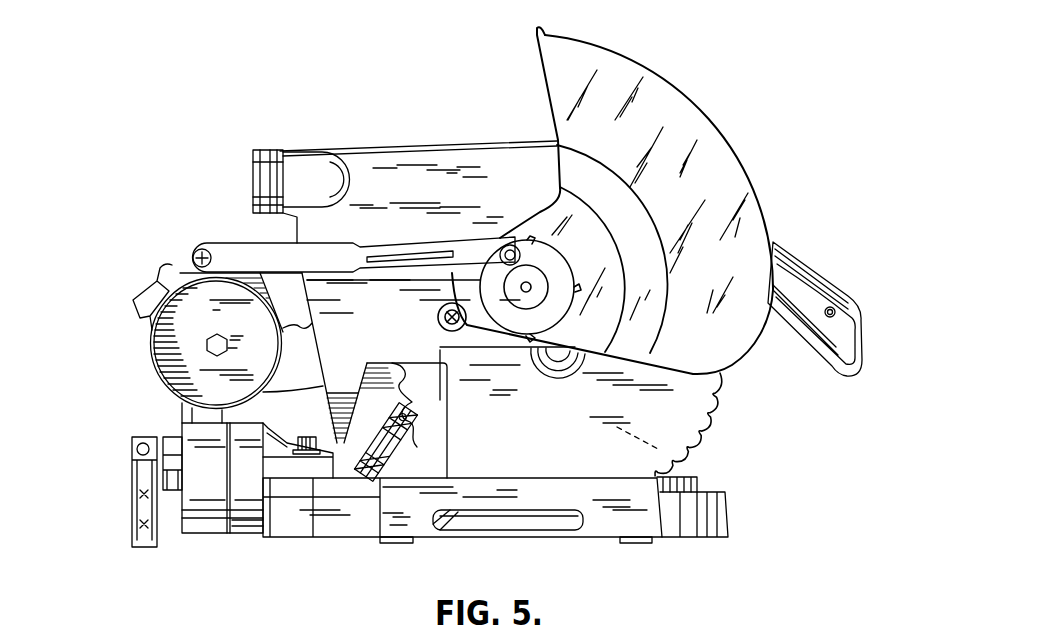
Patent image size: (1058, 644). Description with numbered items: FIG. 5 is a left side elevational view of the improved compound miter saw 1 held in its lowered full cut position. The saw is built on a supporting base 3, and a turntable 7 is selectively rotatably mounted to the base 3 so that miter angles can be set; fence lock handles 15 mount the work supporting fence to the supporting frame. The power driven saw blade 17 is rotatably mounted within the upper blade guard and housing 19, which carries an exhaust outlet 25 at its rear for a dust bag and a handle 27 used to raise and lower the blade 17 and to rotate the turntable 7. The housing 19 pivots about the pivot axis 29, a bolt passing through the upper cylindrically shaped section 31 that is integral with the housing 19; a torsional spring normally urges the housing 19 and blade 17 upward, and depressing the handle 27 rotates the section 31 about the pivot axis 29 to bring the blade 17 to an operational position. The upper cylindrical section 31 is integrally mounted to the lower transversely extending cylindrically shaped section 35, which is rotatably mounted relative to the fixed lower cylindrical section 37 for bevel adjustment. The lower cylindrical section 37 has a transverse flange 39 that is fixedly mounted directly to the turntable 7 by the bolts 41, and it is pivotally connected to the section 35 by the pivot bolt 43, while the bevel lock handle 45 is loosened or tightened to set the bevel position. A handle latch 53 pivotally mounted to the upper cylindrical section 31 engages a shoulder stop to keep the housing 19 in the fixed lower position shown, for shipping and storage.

The compound miter saw 1 is at (781, 80).
The supporting base 3 is at (668, 538).
The turntable 7 is at (694, 477).
The fence lock handles 15 is at (367, 467).
The power driven saw blade 17 is at (668, 413).
The upper blade guard and housing 19 is at (465, 160).
The exhaust outlet 25 is at (258, 150).
The handle 27 is at (813, 268).
The pivot axis 29 is at (208, 350).
The upper cylindrically shaped section 31 is at (189, 329).
The lower transversely extending cylindrically shaped section 35 is at (212, 517).
The lower cylindrical section 37 is at (247, 522).
The transverse flange 39 is at (308, 468).
The bolts 41 is at (316, 437).
The pivot bolt 43 is at (175, 497).
The bevel lock handle 45 is at (147, 547).
The handle latch 53 is at (150, 283).